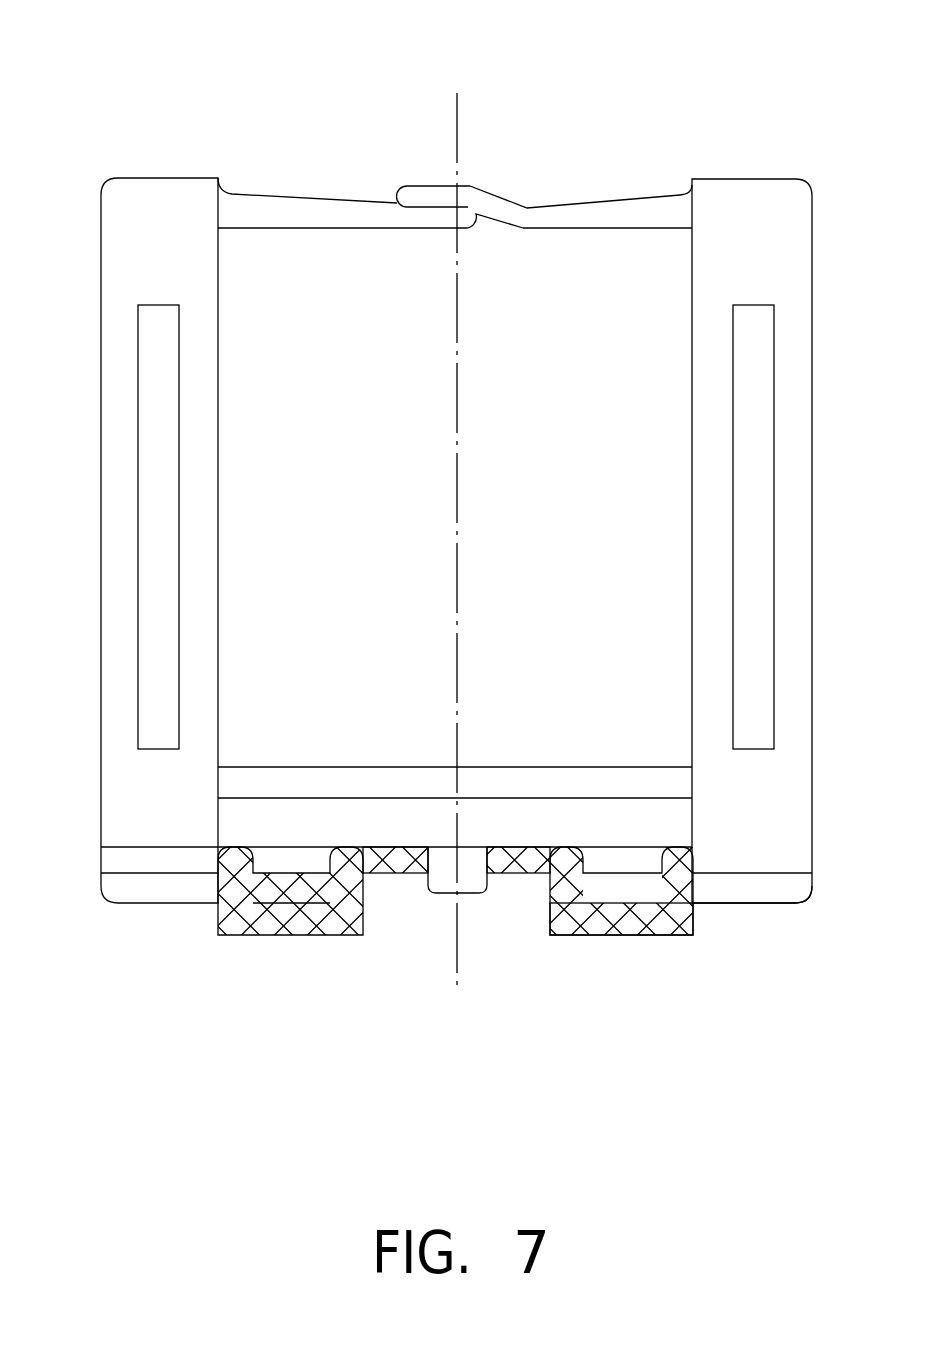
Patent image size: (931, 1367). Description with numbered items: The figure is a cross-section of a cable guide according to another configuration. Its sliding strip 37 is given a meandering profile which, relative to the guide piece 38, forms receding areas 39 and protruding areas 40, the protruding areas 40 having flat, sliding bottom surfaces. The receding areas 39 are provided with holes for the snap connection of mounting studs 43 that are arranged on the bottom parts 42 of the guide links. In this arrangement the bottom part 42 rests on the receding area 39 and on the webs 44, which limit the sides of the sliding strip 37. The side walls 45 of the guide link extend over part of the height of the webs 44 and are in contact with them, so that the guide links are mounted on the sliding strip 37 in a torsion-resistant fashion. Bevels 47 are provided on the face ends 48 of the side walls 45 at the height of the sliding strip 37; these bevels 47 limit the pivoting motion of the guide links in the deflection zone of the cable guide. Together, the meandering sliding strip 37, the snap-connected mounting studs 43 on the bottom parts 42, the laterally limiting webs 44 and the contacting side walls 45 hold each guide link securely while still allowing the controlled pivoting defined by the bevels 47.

The sliding strip 37 is at (665, 935).
The guide piece 38 is at (326, 150).
The receding areas 39 is at (516, 880).
The protruding areas 40 is at (590, 950).
The bottom parts 42 is at (678, 827).
The mounting studs 43 is at (445, 858).
The webs 44 is at (240, 872).
The side walls 45 is at (155, 813).
The bevels 47 is at (793, 889).
The face ends 48 is at (757, 168).